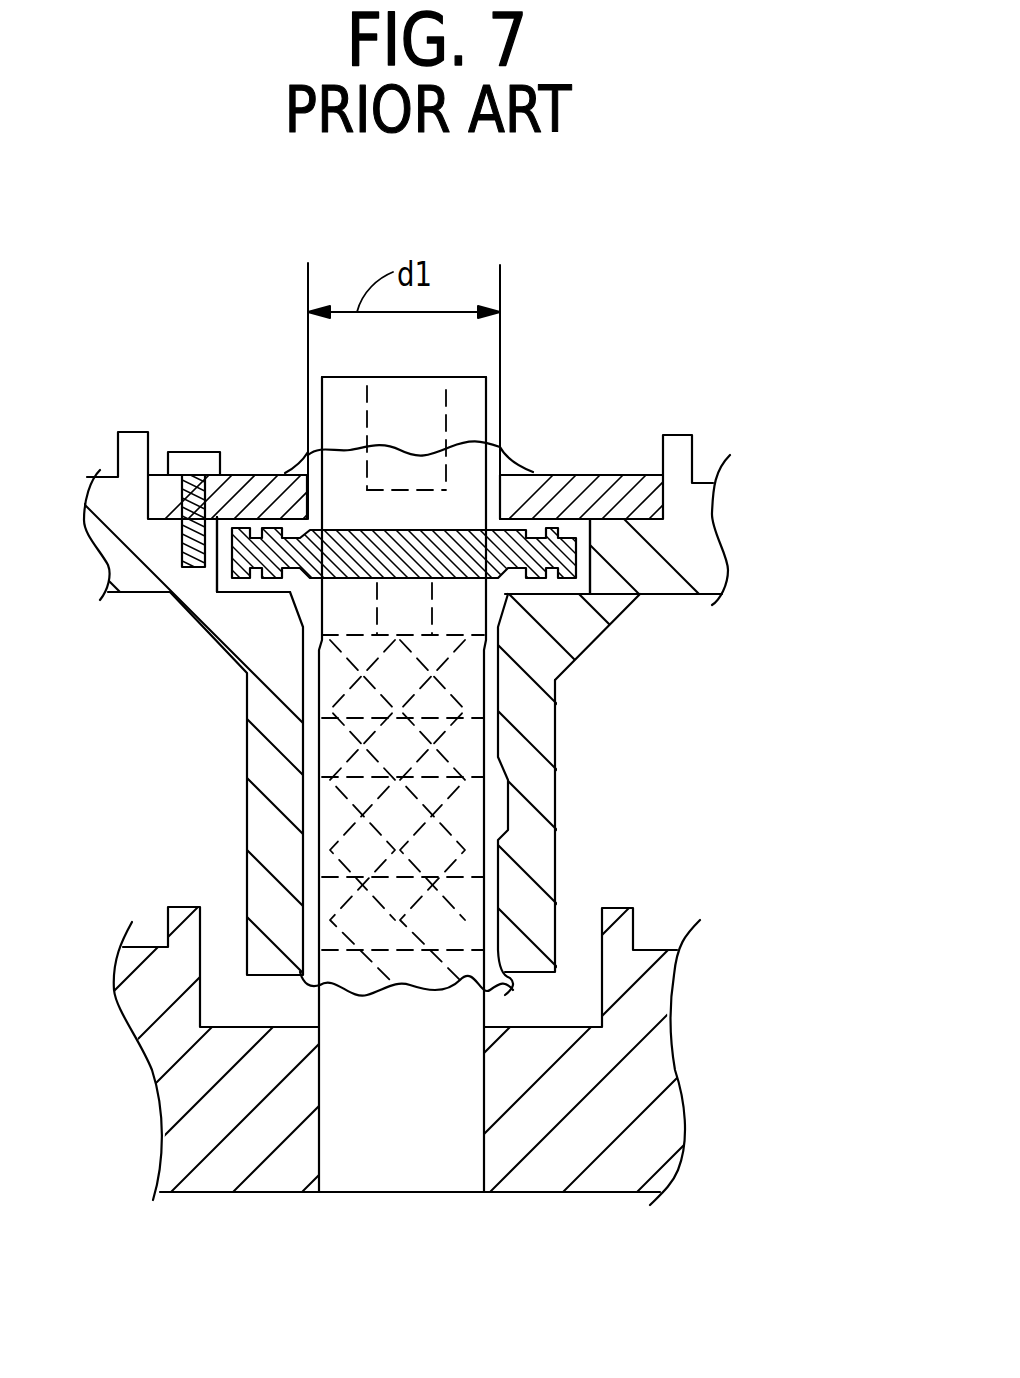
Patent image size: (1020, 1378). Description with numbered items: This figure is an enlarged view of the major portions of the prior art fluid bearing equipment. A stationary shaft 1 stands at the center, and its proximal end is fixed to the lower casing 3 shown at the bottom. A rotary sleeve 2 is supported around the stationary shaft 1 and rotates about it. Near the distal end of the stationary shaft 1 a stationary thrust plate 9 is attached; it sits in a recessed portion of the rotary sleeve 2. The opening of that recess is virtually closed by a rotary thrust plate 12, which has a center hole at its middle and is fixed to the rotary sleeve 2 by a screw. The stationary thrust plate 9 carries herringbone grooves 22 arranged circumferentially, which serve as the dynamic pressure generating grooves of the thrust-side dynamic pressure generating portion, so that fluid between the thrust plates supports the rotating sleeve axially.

The stationary shaft 1 is at (417, 1180).
The rotary sleeve 2 is at (700, 500).
The lower casing 3 is at (655, 1060).
The stationary thrust plate 9 is at (580, 550).
The rotary thrust plate 12 is at (597, 480).
The herringbone grooves 22 is at (252, 538).